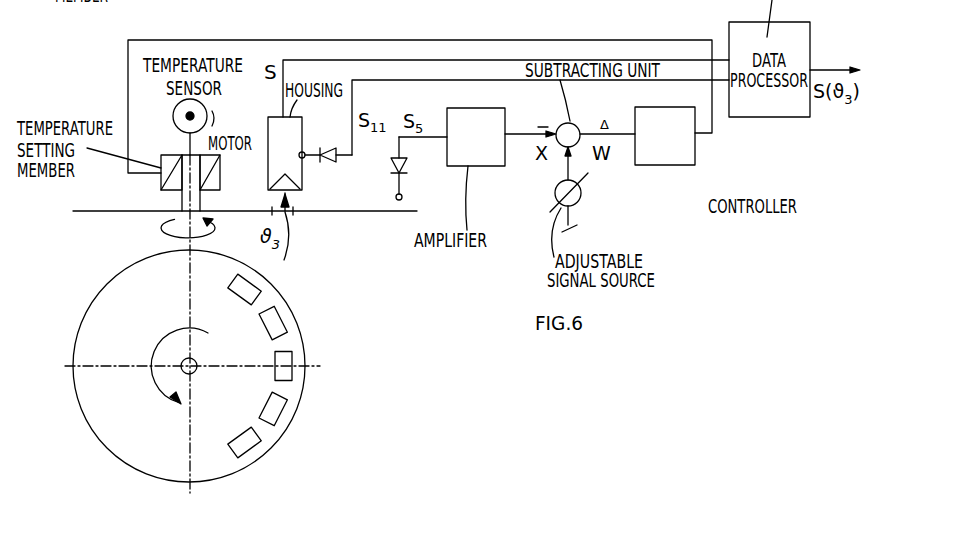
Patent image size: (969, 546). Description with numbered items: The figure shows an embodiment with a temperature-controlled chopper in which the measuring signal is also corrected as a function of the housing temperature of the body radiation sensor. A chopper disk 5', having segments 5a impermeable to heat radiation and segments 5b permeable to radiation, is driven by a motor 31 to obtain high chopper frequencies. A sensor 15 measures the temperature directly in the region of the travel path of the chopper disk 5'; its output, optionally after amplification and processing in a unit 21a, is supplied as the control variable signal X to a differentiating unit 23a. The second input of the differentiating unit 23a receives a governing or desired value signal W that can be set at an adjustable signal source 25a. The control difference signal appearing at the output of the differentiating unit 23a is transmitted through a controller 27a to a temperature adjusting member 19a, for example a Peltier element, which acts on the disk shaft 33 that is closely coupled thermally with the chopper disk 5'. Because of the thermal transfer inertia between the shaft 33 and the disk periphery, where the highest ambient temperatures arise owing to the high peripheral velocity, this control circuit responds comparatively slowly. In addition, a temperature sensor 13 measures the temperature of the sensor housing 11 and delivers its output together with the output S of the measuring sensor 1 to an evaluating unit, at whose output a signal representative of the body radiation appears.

The measuring sensor 1 is at (268, 166).
The sensor housing 11 is at (293, 131).
The temperature sensor 13 is at (330, 162).
The sensor 15 is at (405, 162).
The temperature adjusting member 19a is at (161, 181).
The unit 21a is at (485, 152).
The differentiating unit 23a is at (572, 123).
The adjustable signal source 25a is at (582, 198).
The controller 27a is at (663, 152).
The motor 31 is at (172, 116).
The disk shaft 33 is at (182, 200).
The chopper disk 5' is at (298, 241).
The segments impermeable to heat radiation 5a is at (280, 385).
The segments permeable to radiation 5b is at (273, 320).